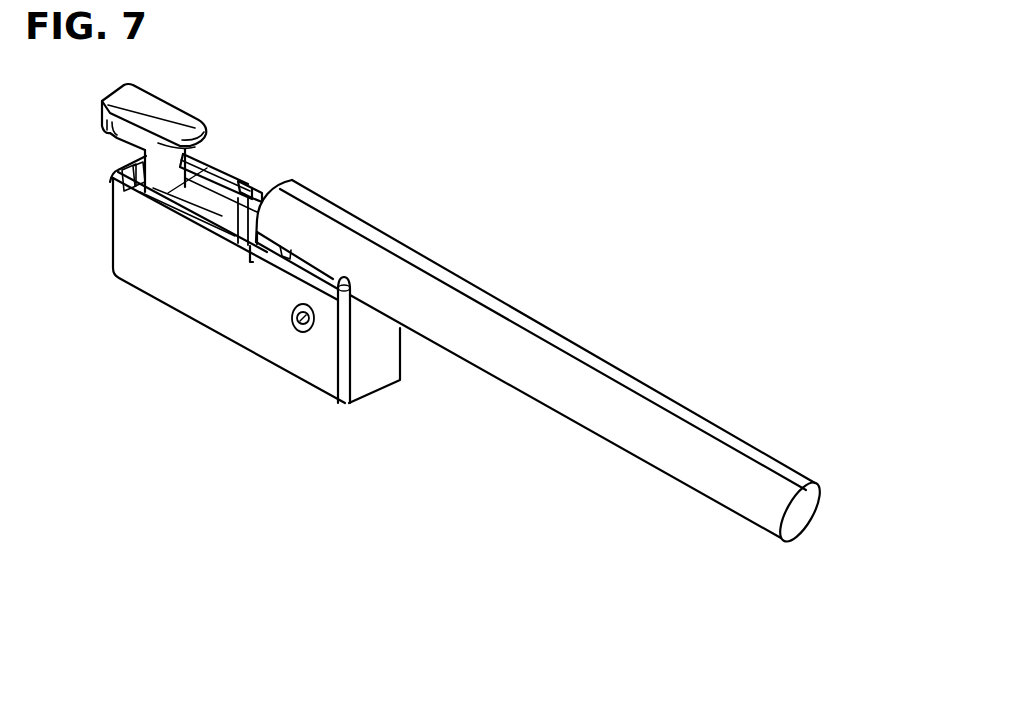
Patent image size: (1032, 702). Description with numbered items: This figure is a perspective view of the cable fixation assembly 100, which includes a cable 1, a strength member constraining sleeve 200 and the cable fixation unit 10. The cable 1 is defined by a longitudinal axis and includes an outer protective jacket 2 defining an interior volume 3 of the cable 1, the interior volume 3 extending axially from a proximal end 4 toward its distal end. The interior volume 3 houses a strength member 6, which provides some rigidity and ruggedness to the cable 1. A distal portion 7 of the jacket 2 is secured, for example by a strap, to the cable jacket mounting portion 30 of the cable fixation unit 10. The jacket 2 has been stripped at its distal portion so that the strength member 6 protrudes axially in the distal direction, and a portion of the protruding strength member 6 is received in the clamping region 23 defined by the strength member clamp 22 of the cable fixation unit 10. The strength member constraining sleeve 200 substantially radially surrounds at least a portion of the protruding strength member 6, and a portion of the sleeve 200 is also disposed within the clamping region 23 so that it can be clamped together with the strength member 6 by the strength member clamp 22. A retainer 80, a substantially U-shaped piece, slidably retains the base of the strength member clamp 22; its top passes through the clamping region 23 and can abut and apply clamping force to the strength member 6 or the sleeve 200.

The cable fixation assembly 100 is at (470, 158).
The cable fixation unit 10 is at (148, 302).
The strength member clamp 22 is at (192, 122).
The clamping region 23 is at (194, 174).
The cable jacket mounting portion 30 is at (307, 272).
The retainer 80 is at (133, 168).
The strength member constraining sleeve 200 is at (230, 173).
The strength member 6 is at (256, 190).
The distal portion of the jacket 7 is at (337, 210).
The cable 1 is at (568, 376).
The outer protective jacket 2 is at (770, 455).
The interior volume 3 is at (805, 522).
The proximal end 4 is at (825, 493).